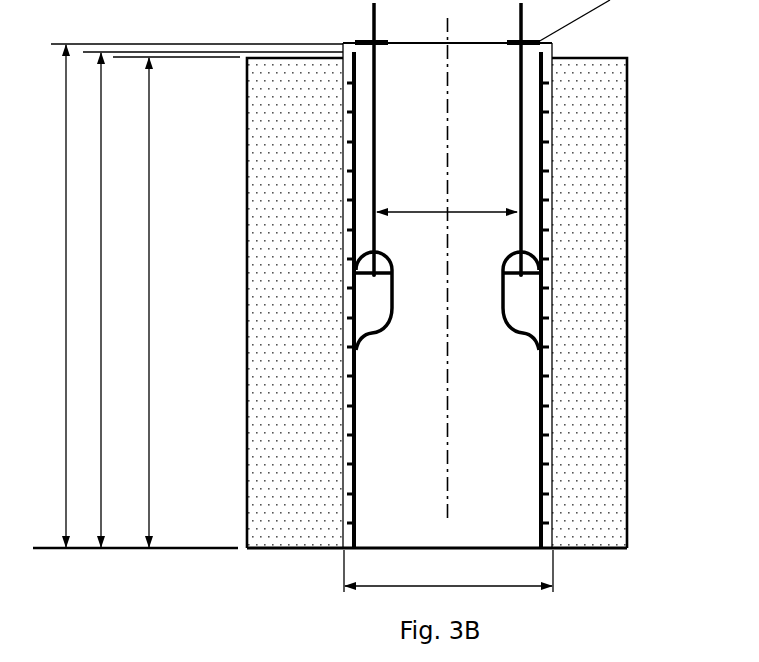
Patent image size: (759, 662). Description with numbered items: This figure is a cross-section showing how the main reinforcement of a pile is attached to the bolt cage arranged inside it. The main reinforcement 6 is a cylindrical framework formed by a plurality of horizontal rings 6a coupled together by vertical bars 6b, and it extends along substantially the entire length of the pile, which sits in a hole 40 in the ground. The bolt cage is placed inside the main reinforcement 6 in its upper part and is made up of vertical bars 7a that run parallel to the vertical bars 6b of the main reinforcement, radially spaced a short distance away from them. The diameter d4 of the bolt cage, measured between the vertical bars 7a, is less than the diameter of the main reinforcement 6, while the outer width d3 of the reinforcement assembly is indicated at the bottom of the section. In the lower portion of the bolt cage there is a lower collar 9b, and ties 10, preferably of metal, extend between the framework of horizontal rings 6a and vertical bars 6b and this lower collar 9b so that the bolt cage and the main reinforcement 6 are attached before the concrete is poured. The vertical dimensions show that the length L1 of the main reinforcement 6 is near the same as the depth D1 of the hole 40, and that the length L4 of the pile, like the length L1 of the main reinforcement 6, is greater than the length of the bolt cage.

The vertical bars of the bolt cage 7a is at (372, 23).
The main reinforcement 6 is at (352, 163).
The horizontal rings 6a is at (545, 170).
The vertical bars of the main reinforcement 6b is at (545, 128).
The lower collar 9b is at (356, 267).
The ties 10 is at (505, 313).
The hole 40 is at (553, 455).
The diameter of the bolt cage d4 is at (447, 199).
The tube outer diameter dimension d3 is at (448, 571).
The length of the pile L4 is at (195, 295).
The length of the main reinforcement L1 is at (213, 299).
The depth of the hole D1 is at (176, 302).